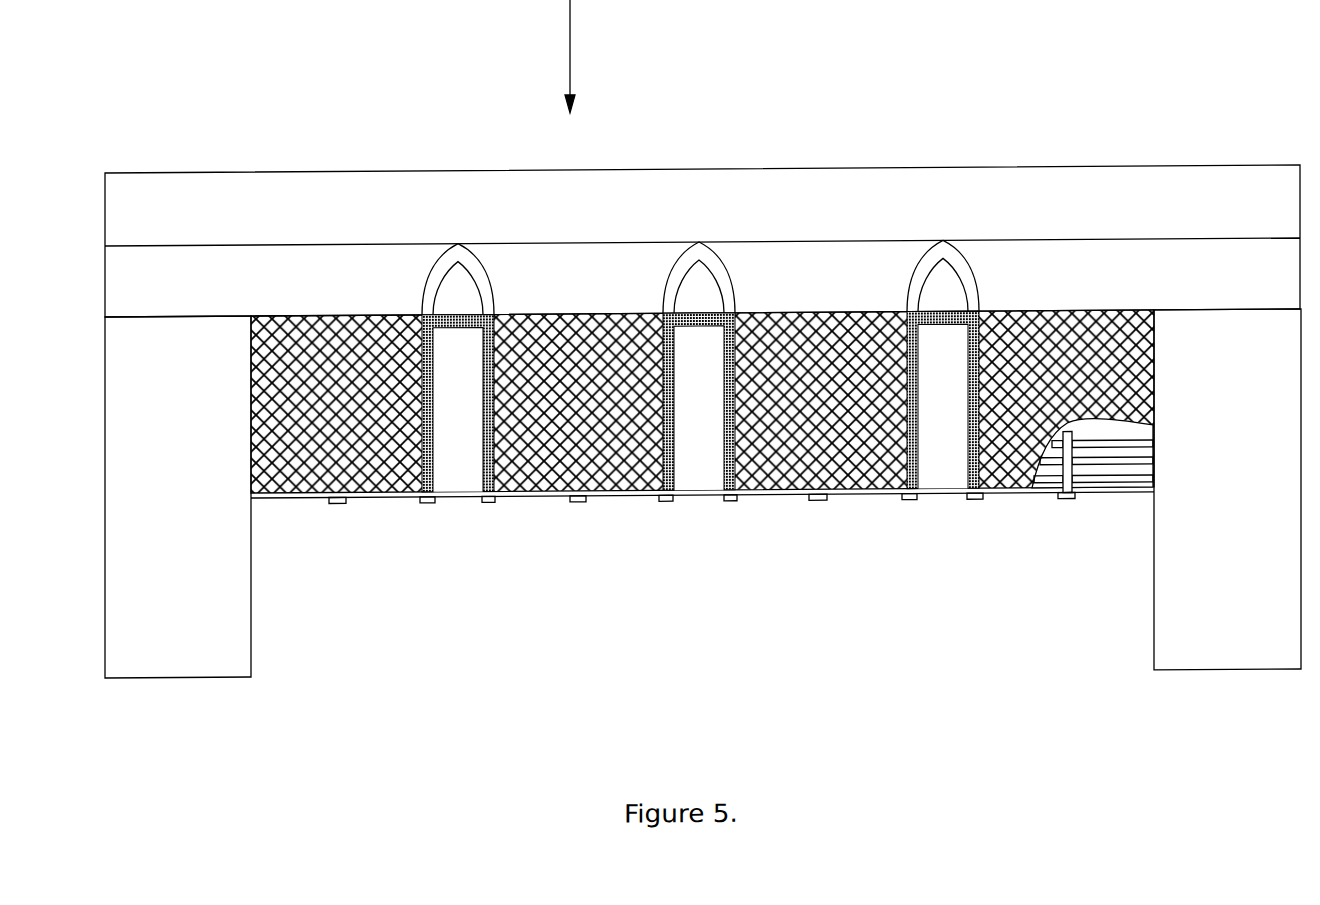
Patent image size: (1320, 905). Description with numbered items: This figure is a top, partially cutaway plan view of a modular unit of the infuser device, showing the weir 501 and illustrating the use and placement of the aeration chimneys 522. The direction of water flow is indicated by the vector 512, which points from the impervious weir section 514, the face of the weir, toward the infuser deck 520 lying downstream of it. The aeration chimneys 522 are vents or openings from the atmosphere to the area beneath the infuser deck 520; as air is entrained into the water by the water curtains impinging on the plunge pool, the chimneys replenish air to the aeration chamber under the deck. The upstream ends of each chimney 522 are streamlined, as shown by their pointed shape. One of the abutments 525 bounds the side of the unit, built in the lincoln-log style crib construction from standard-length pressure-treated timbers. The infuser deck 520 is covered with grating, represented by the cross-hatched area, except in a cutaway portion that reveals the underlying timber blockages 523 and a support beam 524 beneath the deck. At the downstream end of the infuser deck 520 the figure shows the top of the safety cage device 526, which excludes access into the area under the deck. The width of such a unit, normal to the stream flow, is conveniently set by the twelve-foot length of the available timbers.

The weir 501 is at (758, 612).
The vector 512 is at (595, 56).
The impervious weir section 514 is at (1009, 246).
The infuser deck 520 is at (1117, 385).
The aeration chimneys 522 is at (698, 422).
The timber blockages 523 is at (1052, 486).
The support beam 524 is at (1066, 502).
The abutment 525 is at (1154, 667).
The safety cage device 526 is at (516, 501).